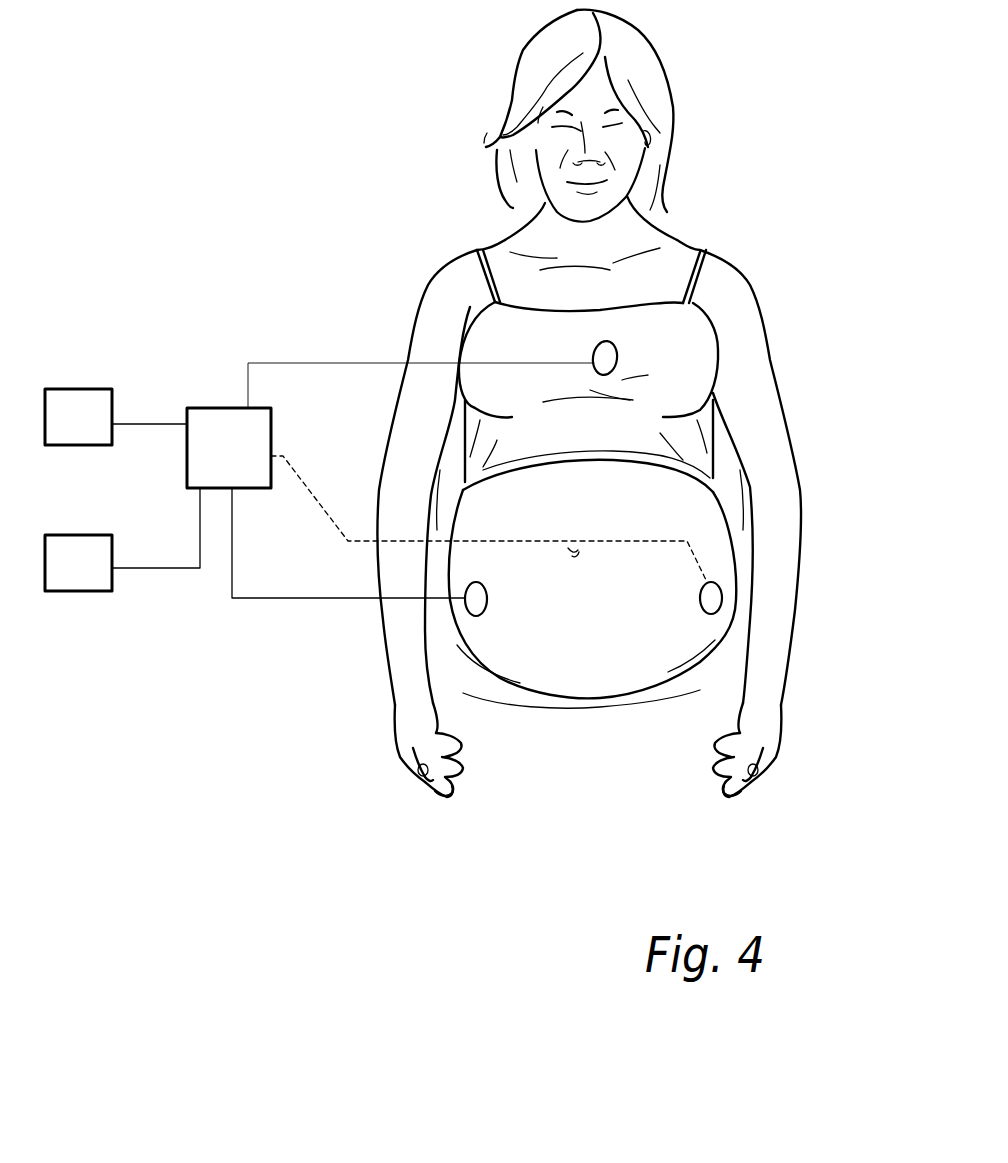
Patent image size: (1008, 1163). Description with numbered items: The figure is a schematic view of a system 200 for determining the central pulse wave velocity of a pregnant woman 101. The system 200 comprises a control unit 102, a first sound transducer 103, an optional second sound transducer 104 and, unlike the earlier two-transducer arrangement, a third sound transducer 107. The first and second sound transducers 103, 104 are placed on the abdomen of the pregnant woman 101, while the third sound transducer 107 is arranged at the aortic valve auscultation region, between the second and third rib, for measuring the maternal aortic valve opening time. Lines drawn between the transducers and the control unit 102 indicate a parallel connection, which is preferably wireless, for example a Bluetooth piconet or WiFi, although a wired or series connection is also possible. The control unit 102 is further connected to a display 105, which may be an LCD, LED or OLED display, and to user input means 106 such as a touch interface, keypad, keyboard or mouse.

The pregnant woman 101 is at (736, 271).
The control unit 102 is at (215, 408).
The first sound transducer 103 is at (466, 609).
The second sound transducer 104 is at (722, 598).
The display 105 is at (85, 390).
The user input means 106 is at (85, 591).
The third sound transducer 107 is at (617, 360).
The system 200 is at (325, 271).